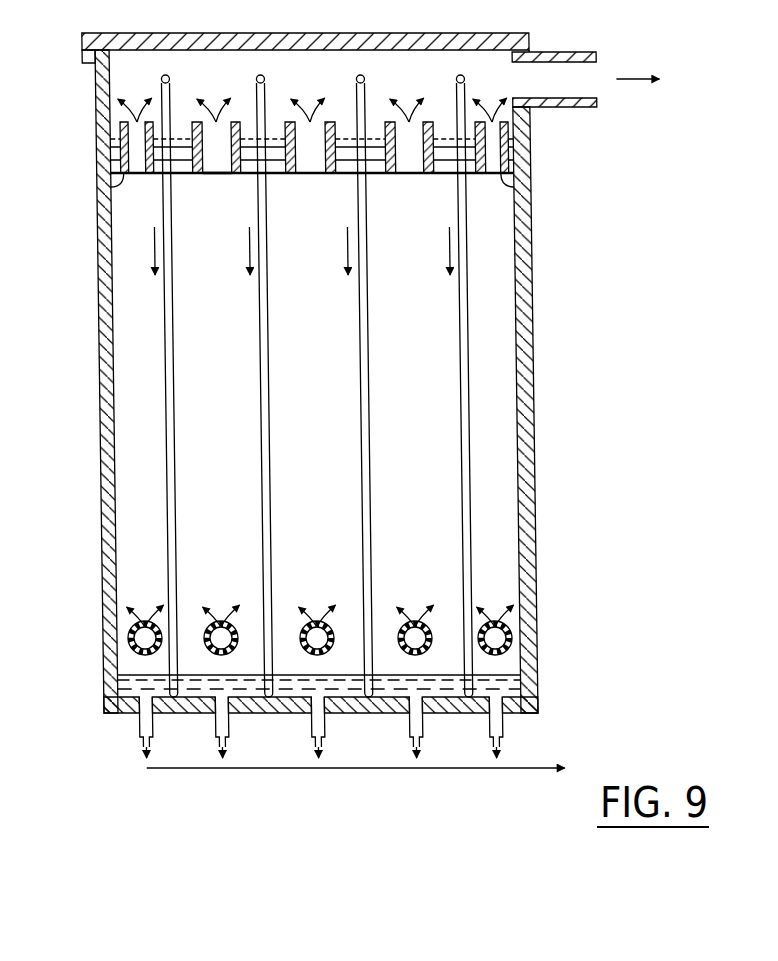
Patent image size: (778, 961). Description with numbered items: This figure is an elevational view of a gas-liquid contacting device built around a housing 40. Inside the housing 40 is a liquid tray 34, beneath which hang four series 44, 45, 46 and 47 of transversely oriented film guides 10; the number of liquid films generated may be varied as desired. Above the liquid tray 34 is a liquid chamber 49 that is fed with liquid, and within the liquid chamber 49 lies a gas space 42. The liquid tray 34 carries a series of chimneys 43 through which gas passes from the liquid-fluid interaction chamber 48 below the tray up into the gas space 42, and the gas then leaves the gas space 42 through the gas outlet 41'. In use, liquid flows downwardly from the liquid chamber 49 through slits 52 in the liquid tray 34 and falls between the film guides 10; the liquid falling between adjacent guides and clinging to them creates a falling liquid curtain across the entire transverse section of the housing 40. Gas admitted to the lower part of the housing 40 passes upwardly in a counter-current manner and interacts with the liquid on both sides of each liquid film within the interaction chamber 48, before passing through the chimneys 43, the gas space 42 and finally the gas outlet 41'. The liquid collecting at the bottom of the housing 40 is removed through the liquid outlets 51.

The film guides 10 is at (258, 508).
The liquid tray 34 is at (186, 174).
The housing 40 is at (275, 381).
The gas outlet 41' is at (586, 103).
The gas space 42 is at (130, 60).
The chimneys 43 is at (203, 118).
The first series of film guides 44 is at (178, 403).
The second series of film guides 45 is at (273, 403).
The third series of film guides 46 is at (371, 398).
The fourth series of film guides 47 is at (471, 396).
The liquid-fluid interaction chamber 48 is at (122, 322).
The liquid chamber 49 is at (114, 131).
The liquid outlets 51 is at (140, 727).
The slits 52 is at (251, 174).